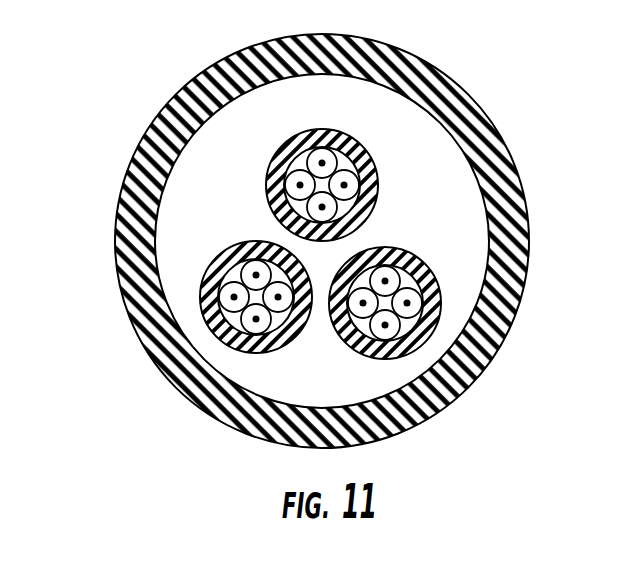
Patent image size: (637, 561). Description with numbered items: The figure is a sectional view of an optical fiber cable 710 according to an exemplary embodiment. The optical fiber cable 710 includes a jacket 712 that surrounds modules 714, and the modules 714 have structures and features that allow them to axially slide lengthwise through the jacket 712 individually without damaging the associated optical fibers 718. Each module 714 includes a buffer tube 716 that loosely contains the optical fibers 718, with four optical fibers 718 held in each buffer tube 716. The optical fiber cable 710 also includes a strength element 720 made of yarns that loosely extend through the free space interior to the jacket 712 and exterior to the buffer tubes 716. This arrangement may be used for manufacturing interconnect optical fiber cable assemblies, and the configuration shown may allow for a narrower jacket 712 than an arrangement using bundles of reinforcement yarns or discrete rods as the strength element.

The optical fiber cable 710 is at (112, 87).
The jacket 712 is at (492, 142).
The module 714 is at (352, 205).
The buffer tube 716 is at (470, 378).
The optical fiber 718 is at (197, 303).
The strength element 720 is at (173, 232).